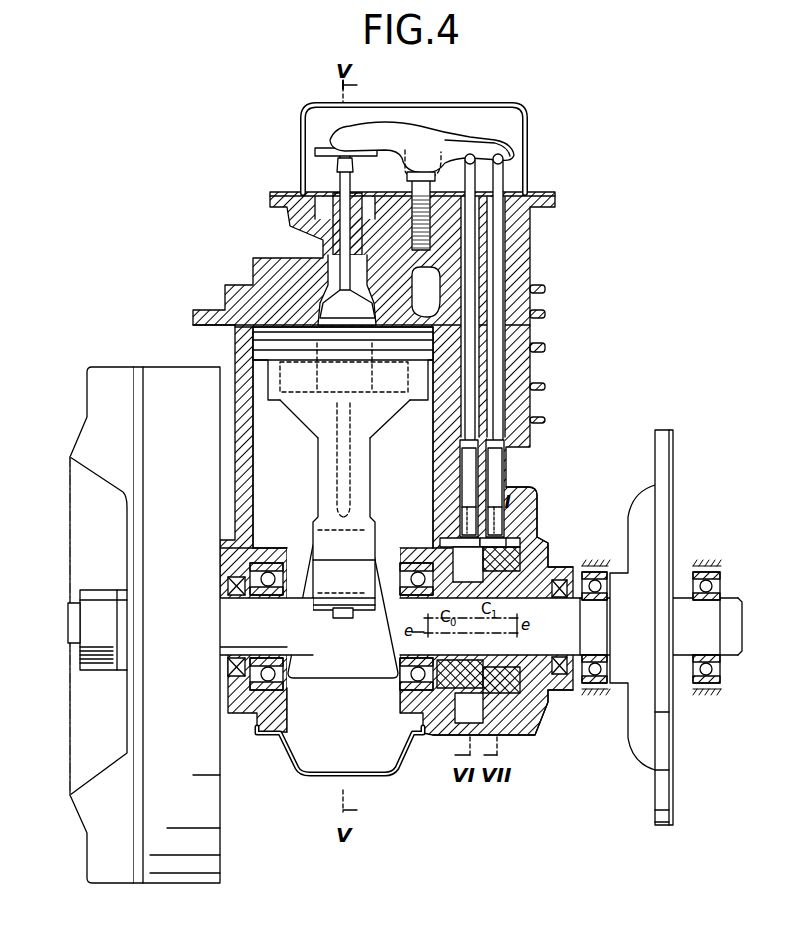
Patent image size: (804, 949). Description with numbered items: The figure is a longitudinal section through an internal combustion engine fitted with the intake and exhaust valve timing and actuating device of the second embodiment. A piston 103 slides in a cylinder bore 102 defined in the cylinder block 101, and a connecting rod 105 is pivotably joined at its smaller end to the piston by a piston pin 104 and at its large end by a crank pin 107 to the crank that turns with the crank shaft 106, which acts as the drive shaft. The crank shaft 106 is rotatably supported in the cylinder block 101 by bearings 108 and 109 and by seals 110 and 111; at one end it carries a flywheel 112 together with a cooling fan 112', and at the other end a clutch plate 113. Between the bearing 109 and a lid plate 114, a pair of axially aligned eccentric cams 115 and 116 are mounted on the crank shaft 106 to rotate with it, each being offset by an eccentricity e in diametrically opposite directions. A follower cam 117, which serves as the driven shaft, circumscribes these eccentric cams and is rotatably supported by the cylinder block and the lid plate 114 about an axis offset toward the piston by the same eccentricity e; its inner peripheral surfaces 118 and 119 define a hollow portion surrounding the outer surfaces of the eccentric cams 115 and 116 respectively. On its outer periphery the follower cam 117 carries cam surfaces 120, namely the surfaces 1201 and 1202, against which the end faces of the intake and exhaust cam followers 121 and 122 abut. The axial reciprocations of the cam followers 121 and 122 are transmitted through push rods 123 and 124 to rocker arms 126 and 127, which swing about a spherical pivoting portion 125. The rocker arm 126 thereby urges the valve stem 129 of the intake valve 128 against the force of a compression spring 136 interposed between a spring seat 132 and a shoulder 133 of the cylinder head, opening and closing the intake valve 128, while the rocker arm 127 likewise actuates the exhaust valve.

The cylinder block 101 is at (232, 360).
The cylinder bore 102 is at (240, 505).
The piston 103 is at (359, 384).
The piston pin 104 is at (394, 403).
The connecting rod 105 is at (367, 483).
The crank shaft 106 is at (263, 637).
The crank pin 107 is at (368, 519).
The bearing 108 is at (279, 560).
The bearing 109 is at (402, 562).
The seal 110 is at (228, 665).
The seal 111 is at (562, 690).
The flywheel 112 is at (176, 608).
The cooling fan 112' is at (85, 625).
The clutch plate 113 is at (656, 448).
The lid plate 114 is at (538, 528).
The eccentric cam 115 is at (467, 690).
The eccentric cam 116 is at (517, 586).
The follower cam 117 is at (512, 540).
The inner peripheral surface 118 is at (467, 547).
The inner peripheral surface 119 is at (520, 572).
The cam surface 120 is at (485, 700).
The cam surface 1201 is at (455, 534).
The cam surface 1202 is at (535, 526).
The cam follower 121 is at (463, 459).
The cam follower 122 is at (504, 453).
The push rod 123 is at (467, 221).
The push rod 124 is at (498, 221).
The spherical pivoting portion 125 is at (434, 178).
The rocker arm 126 is at (388, 125).
The rocker arm 127 is at (455, 128).
The intake valve 128 is at (362, 296).
The valve stem 129 is at (341, 264).
The spring seat 132 is at (309, 151).
The shoulder 133 is at (363, 212).
The compression spring 136 is at (412, 178).